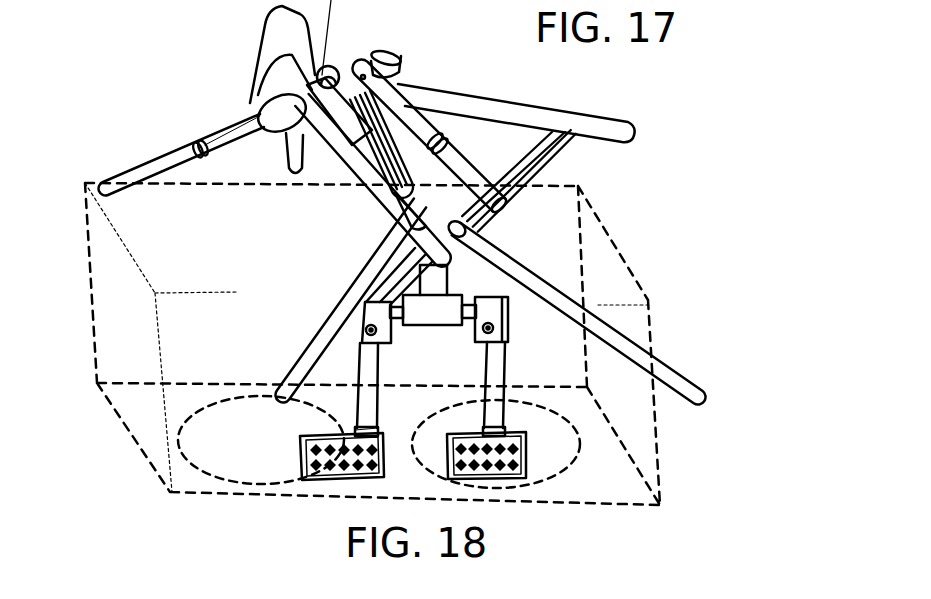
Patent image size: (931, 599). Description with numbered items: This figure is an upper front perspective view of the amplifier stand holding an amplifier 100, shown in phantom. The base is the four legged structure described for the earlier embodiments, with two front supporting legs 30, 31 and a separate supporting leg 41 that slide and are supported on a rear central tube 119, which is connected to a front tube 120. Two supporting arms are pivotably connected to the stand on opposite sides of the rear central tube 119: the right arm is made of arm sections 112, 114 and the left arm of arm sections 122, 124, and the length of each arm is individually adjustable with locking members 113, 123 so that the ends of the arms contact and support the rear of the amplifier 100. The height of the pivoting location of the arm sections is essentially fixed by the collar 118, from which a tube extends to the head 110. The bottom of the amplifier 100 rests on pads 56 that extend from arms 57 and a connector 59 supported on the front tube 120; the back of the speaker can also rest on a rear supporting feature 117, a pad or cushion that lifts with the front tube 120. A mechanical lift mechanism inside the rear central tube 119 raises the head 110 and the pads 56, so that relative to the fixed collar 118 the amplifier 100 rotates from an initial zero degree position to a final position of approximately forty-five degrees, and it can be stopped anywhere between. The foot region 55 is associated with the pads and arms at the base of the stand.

The front supporting leg 30 is at (308, 343).
The front supporting leg 31 is at (667, 363).
The supporting leg 41 is at (610, 118).
The foot assembly 55 is at (356, 401).
The pads 56 is at (330, 475).
The arms 57 is at (507, 375).
The connector 59 is at (438, 327).
The amplifier 100 is at (627, 253).
The head 110 is at (260, 57).
The right arm section 112 is at (401, 96).
The locking member 113 is at (443, 138).
The right arm section 114 is at (470, 167).
The rear supporting feature 117 is at (273, 117).
The collar 118 is at (337, 65).
The rear central tube 119 is at (370, 165).
The front tube 120 is at (367, 210).
The left arm section 122 is at (233, 130).
The locking member 123 is at (197, 150).
The left arm section 124 is at (148, 167).